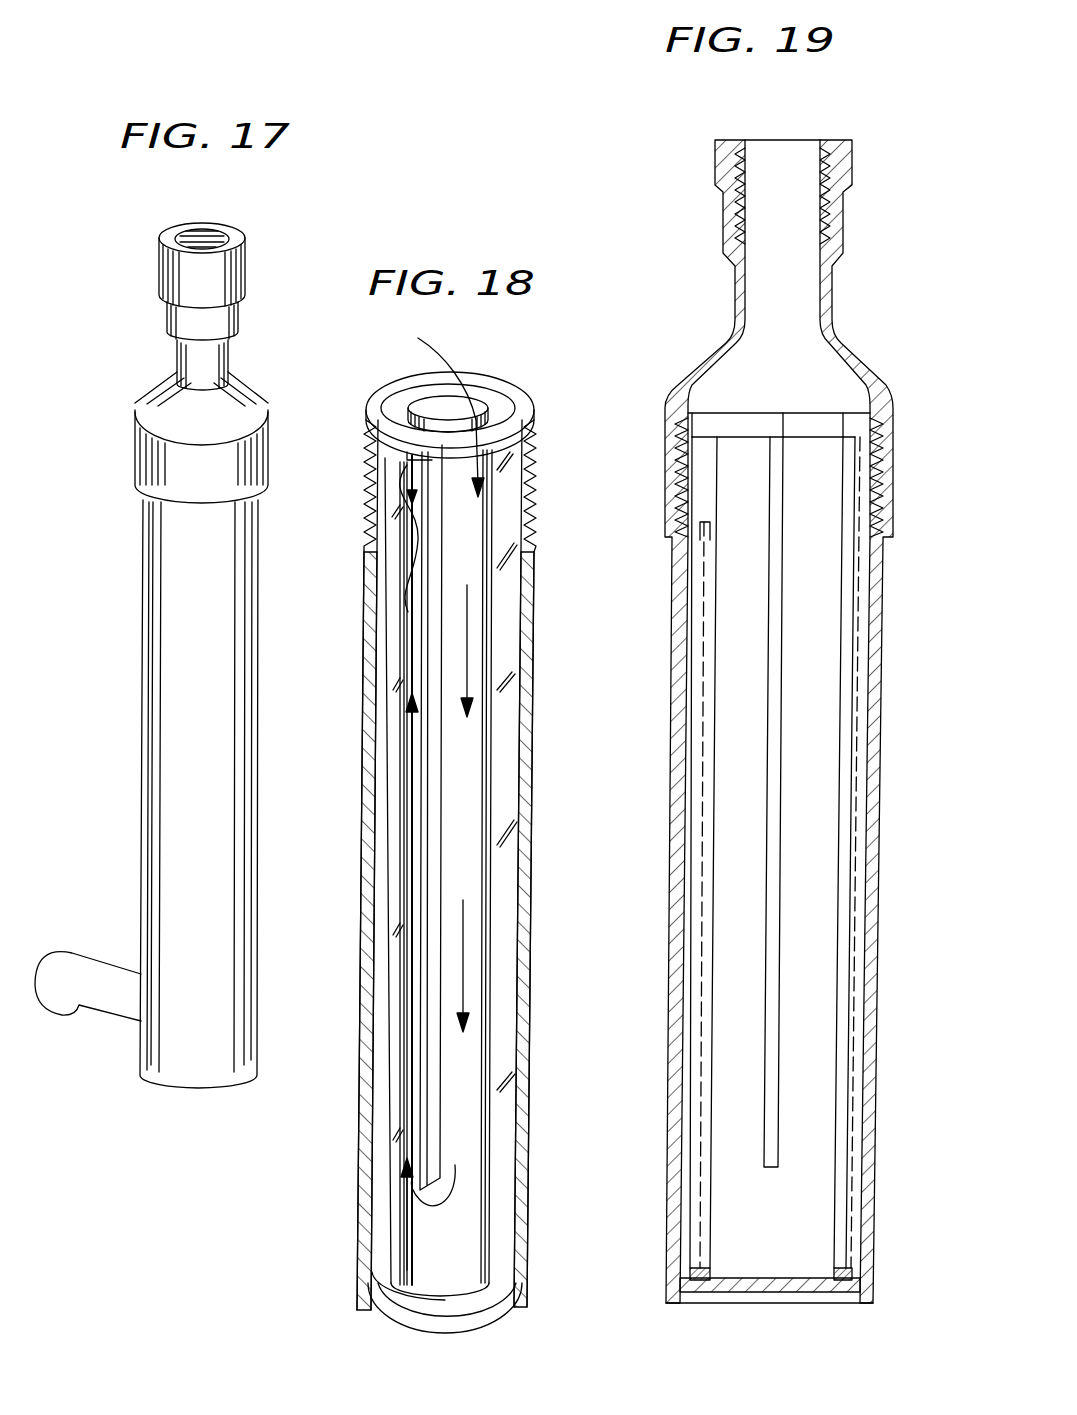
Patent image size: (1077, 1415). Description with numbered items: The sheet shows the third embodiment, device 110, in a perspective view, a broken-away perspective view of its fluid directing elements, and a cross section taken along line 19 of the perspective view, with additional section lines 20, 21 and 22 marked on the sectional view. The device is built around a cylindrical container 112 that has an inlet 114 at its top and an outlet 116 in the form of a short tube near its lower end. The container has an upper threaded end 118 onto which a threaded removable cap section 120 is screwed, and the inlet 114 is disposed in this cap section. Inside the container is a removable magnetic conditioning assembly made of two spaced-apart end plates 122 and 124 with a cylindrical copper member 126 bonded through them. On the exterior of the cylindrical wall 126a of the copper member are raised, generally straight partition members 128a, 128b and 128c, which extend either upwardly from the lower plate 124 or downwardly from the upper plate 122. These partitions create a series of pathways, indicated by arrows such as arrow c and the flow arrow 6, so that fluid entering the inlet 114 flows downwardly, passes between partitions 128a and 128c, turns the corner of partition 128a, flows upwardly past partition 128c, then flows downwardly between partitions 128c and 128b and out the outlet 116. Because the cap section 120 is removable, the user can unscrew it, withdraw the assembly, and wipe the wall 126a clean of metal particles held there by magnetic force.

In FIG. 17, the device 110 is at (137, 668).
In FIG. 19, the device 110 is at (708, 252).
In FIG. 17, the container 112 is at (238, 568).
In FIG. 18, the container 112 is at (363, 920).
In FIG. 19, the container 112 is at (870, 695).
In FIG. 17, the inlet 114 is at (170, 274).
In FIG. 19, the inlet 114 is at (788, 290).
In FIG. 17, the outlet 116 is at (86, 962).
In FIG. 18, the upper threaded end 118 is at (524, 456).
In FIG. 19, the upper threaded end 118 is at (883, 505).
In FIG. 19, the threaded removable cap section 120 is at (738, 290).
In FIG. 19, the end plate 122 is at (745, 418).
In FIG. 18, the end plate 124 is at (490, 1295).
In FIG. 18, the cylindrical copper member 126 is at (468, 1117).
In FIG. 19, the cylindrical copper member 126 is at (737, 640).
In FIG. 18, the cylindrical wall 126a is at (470, 915).
In FIG. 19, the cylindrical wall 126a is at (730, 898).
In FIG. 18, the partition member 128a is at (415, 876).
In FIG. 19, the partition member 128a is at (770, 905).
In FIG. 18, the partition member 128b is at (500, 800).
In FIG. 19, the partition member 128b is at (855, 588).
In FIG. 18, the partition member 128c is at (392, 785).
In FIG. 18, the flow direction arrow 6 is at (480, 640).
In FIG. 18, the pathway arrow c is at (410, 750).
In FIG. 17, the section line 19 is at (207, 235).
In FIG. 19, the section line 20 is at (783, 132).
In FIG. 19, the section line 21 is at (653, 415).
In FIG. 19, the section line 22 is at (667, 1013).